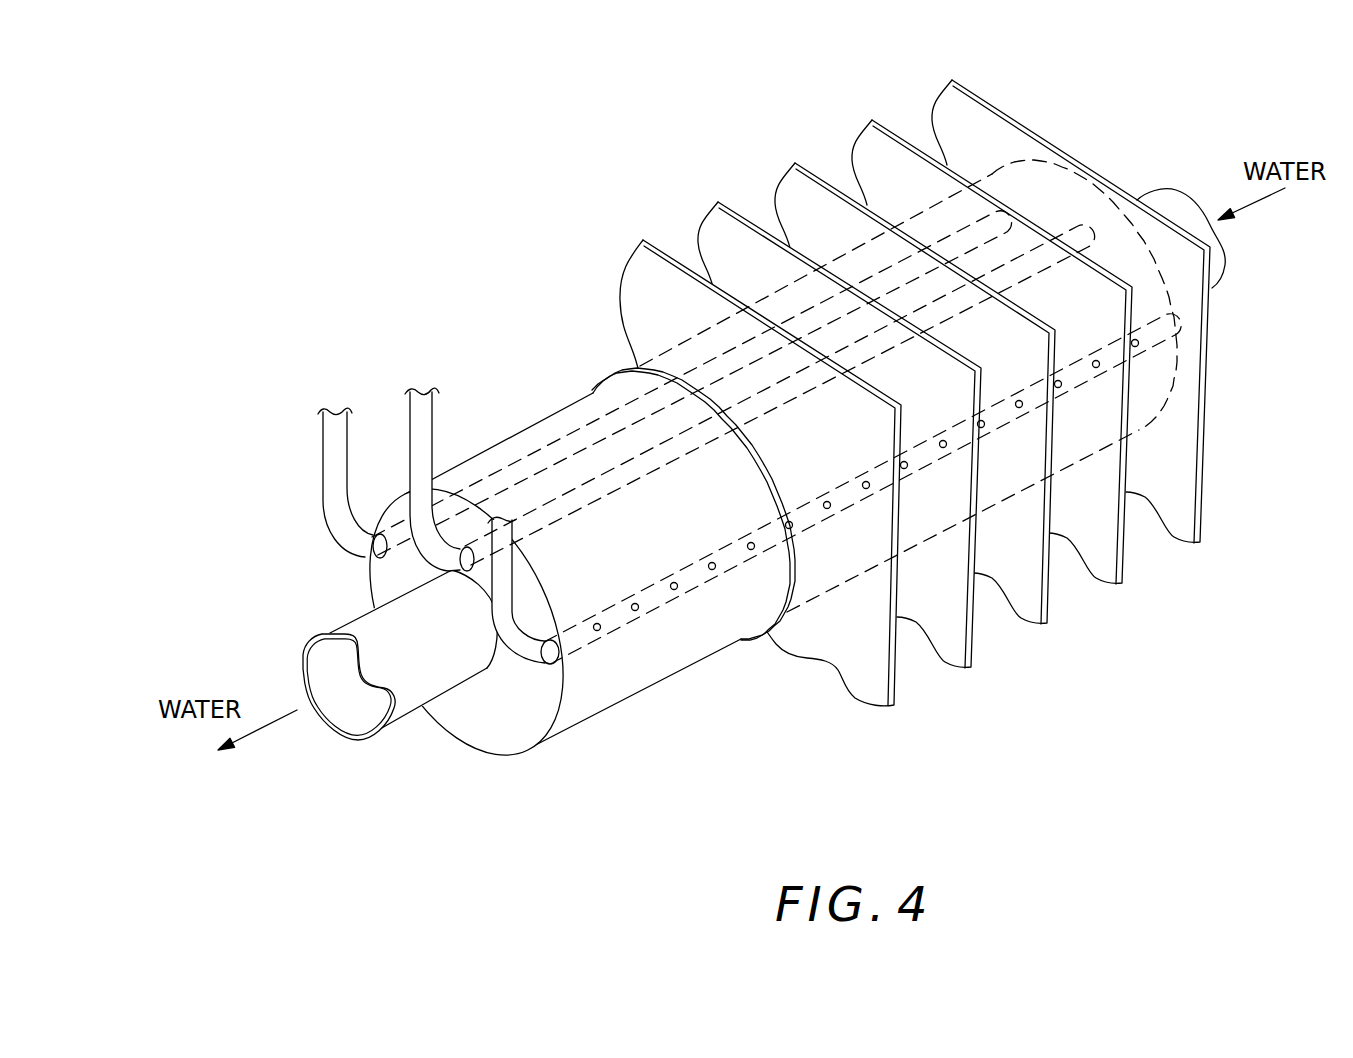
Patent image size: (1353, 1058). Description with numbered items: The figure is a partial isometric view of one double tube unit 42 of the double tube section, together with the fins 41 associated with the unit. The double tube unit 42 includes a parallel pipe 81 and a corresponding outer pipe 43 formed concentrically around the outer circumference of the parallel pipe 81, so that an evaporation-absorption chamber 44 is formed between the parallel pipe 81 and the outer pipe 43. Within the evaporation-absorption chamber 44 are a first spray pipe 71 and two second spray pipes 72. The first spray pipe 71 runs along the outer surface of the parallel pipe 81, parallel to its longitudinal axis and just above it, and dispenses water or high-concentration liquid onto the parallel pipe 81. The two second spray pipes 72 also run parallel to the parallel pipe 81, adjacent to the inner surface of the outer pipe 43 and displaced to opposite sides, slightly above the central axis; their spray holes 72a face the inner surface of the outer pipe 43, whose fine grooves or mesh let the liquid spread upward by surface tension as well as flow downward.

The fins 41 is at (662, 252).
The double tube unit 42 is at (723, 437).
The outer pipe 43 is at (562, 410).
The evaporation-absorption chamber 44 is at (607, 682).
The first spray pipe 71 is at (555, 527).
The second spray pipes 72 is at (500, 428).
The spray holes 72a is at (708, 568).
The parallel pipe 81 is at (331, 634).